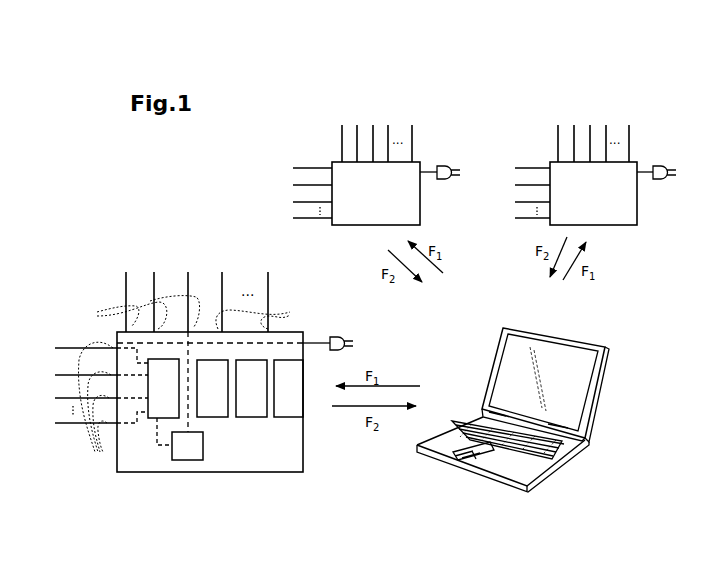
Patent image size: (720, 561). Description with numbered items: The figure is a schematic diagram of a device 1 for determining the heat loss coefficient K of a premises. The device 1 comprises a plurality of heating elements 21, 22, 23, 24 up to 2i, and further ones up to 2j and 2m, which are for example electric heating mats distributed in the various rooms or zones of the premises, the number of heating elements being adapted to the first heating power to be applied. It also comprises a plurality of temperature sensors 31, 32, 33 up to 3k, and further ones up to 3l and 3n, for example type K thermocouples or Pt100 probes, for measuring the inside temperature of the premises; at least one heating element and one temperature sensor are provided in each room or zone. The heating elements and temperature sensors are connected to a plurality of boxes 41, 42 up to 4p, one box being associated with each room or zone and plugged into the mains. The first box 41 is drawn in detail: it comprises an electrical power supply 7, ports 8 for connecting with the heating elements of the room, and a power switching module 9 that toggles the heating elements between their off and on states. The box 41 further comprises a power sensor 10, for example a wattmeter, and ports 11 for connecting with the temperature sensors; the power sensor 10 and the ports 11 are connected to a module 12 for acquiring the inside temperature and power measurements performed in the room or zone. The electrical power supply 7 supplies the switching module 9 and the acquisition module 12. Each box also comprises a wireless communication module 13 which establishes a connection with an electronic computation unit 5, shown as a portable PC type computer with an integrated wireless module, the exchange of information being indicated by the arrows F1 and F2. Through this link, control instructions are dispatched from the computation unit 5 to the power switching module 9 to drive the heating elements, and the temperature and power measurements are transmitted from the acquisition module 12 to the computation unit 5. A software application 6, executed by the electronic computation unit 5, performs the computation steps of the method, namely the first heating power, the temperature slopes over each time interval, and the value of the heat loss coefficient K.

The device 1 is at (209, 194).
The heating element 21 is at (126, 292).
The heating element 22 is at (154, 292).
The heating element 23 is at (188, 292).
The heating element 24 is at (222, 292).
The heating element 2i is at (267, 292).
The heating element 2j is at (412, 133).
The heating element 2m is at (626, 133).
The temperature sensor 31 is at (73, 348).
The temperature sensor 32 is at (73, 374).
The temperature sensor 33 is at (73, 397).
The temperature sensor 3k is at (73, 423).
The temperature sensor 3l is at (304, 217).
The temperature sensor 3n is at (519, 218).
The box 41 is at (176, 486).
The box 42 is at (394, 93).
The box 4p is at (611, 93).
The electronic computation unit 5 is at (530, 410).
The software application 6 is at (615, 372).
The electrical power supply 7 is at (217, 400).
The ports 8 is at (190, 312).
The power switching module 9 is at (256, 400).
The power sensor 10 is at (196, 454).
The ports 11 is at (96, 409).
The acquisition module 12 is at (172, 400).
The wireless communication module 13 is at (297, 400).